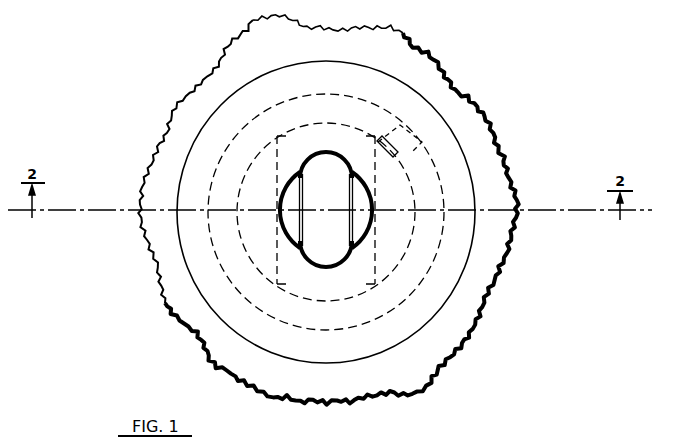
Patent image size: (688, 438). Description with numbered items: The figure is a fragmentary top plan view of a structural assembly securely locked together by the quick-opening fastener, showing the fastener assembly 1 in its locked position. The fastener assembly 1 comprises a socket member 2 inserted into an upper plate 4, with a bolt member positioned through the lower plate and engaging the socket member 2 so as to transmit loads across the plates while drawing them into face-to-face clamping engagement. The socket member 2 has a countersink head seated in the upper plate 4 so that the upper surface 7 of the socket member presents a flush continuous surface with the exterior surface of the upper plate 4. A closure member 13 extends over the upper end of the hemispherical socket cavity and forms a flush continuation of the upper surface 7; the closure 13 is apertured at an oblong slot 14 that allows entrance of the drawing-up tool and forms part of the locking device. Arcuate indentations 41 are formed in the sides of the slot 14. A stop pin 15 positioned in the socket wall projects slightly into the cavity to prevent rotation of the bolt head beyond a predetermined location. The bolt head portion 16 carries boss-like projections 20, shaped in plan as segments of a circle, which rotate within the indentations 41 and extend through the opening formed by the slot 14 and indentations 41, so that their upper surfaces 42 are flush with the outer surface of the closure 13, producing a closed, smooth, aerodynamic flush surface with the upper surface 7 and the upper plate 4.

The fastener assembly 1 is at (392, 62).
The socket member 2 is at (302, 81).
The upper plate 4 is at (197, 117).
The upper surface of the socket member 7 is at (357, 313).
The closure member 13 is at (294, 152).
The aperture 14 is at (328, 154).
The stop pin 15 is at (380, 142).
The head portion 16 is at (341, 285).
The boss-like projections 20 is at (281, 218).
The arcuate indentations 41 is at (286, 193).
The upper surfaces of the bosses 42 is at (295, 217).